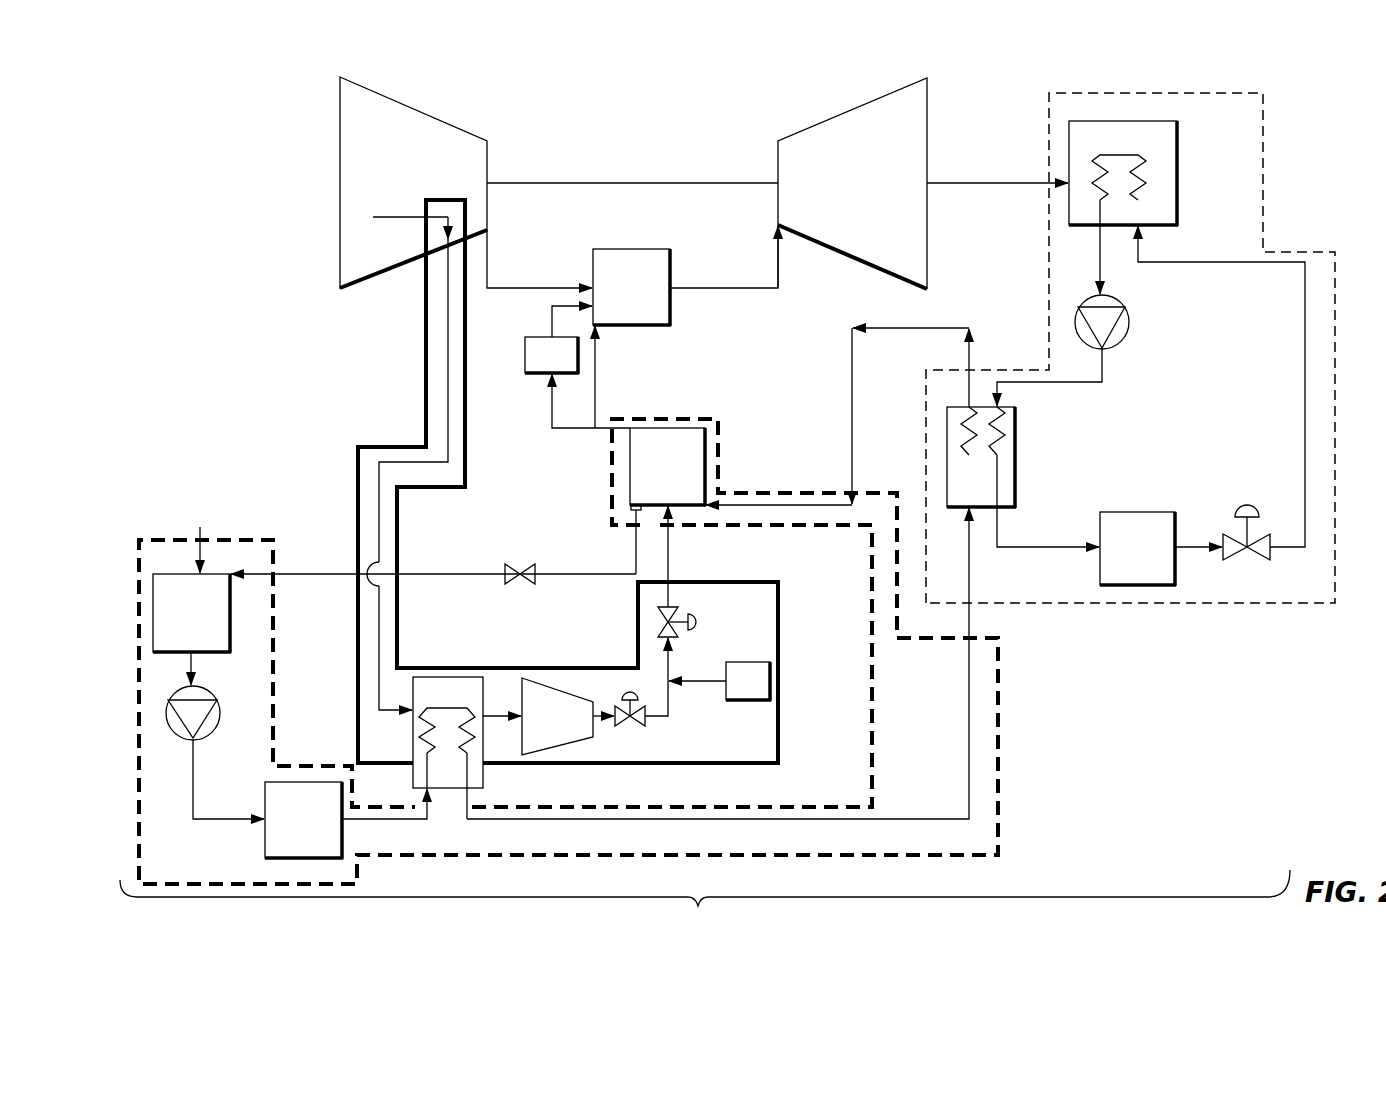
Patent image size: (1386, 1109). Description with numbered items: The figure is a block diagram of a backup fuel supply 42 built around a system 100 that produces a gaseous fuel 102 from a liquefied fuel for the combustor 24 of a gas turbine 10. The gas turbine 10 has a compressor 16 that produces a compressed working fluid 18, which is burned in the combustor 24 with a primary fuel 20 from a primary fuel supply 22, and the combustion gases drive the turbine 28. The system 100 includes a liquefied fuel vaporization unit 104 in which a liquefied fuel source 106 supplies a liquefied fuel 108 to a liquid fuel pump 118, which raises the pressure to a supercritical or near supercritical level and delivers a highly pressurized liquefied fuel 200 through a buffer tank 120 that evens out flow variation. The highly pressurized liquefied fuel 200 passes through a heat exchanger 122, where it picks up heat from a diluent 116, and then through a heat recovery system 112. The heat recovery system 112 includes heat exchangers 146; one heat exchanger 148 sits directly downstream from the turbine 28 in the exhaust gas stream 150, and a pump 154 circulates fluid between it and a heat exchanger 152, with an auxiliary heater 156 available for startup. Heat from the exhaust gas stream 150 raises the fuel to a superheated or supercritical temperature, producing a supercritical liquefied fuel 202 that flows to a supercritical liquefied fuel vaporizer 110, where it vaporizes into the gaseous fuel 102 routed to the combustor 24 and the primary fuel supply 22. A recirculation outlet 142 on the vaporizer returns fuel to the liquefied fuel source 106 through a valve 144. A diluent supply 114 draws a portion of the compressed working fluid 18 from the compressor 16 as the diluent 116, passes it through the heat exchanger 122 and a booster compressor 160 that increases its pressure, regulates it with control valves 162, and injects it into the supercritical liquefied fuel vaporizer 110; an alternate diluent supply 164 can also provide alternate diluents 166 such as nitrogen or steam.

The gas turbine 10 is at (588, 163).
The compressor 16 is at (413, 182).
The compressed working fluid 18 is at (380, 217).
The primary fuel 20 is at (552, 309).
The primary fuel supply 22 is at (552, 355).
The combustor 24 is at (579, 278).
The turbine 28 is at (798, 183).
The backup fuel supply 42 is at (341, 348).
The system 100 is at (705, 904).
The gaseous fuel 102 is at (550, 402).
The liquefied fuel vaporization unit 104 is at (695, 419).
The liquefied fuel source 106 is at (195, 536).
The liquefied fuel 108 is at (230, 680).
The supercritical liquefied fuel vaporizer 110 is at (668, 467).
The heat recovery system 112 is at (1262, 93).
The diluent supply 114 is at (385, 447).
The diluent 116 is at (447, 307).
The liquid fuel pump 118 is at (183, 734).
The buffer tank 120 is at (304, 820).
The heat exchanger 122 is at (483, 780).
The recirculation outlet 142 is at (630, 508).
The valve 144 is at (531, 563).
The heat exchangers 146 is at (1180, 142).
The heat exchanger 148 is at (1177, 205).
The exhaust gas stream 150 is at (994, 182).
The heat exchanger 152 is at (1017, 492).
The pump 154 is at (1129, 325).
The auxiliary heater 156 is at (1151, 406).
The booster compressor 160 is at (557, 716).
The control valve 162 is at (697, 622).
The alternate diluent supply 164 is at (748, 681).
The alternate diluent 166 is at (707, 680).
The highly pressurized liquefied fuel 200 is at (193, 770).
The supercritical liquefied fuel 202 is at (969, 378).